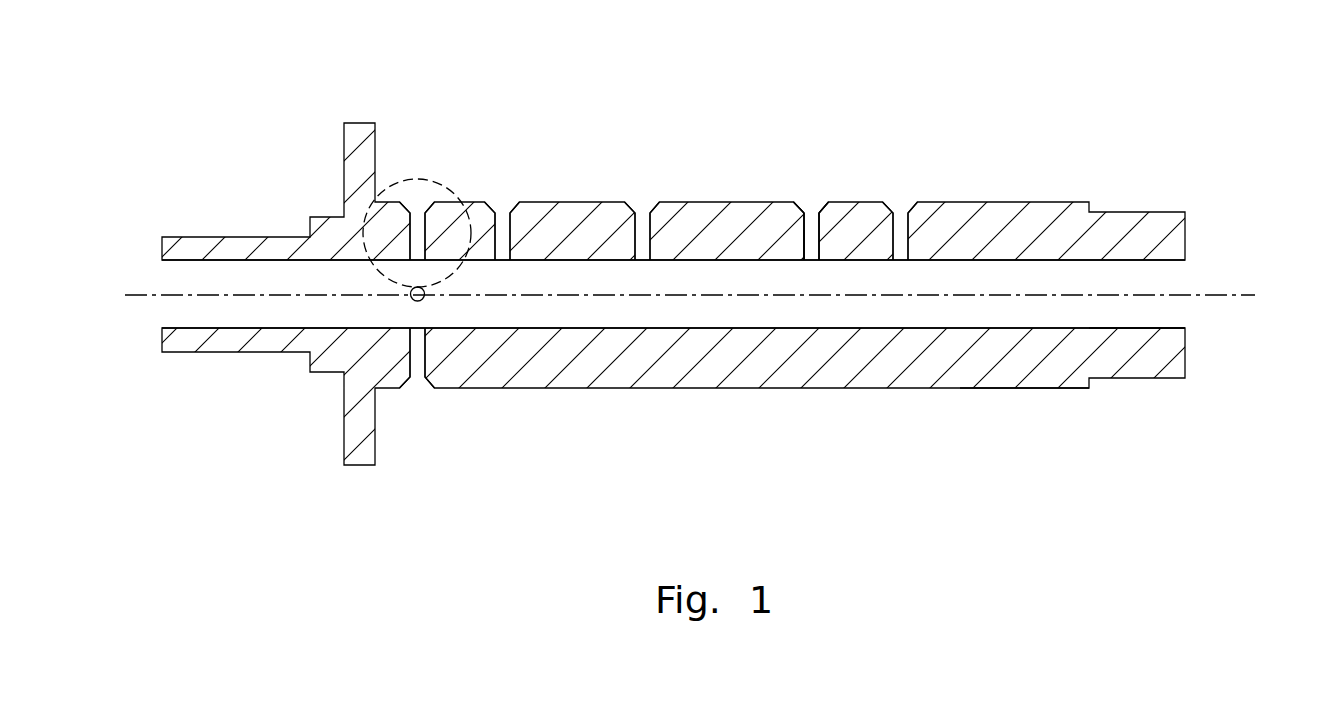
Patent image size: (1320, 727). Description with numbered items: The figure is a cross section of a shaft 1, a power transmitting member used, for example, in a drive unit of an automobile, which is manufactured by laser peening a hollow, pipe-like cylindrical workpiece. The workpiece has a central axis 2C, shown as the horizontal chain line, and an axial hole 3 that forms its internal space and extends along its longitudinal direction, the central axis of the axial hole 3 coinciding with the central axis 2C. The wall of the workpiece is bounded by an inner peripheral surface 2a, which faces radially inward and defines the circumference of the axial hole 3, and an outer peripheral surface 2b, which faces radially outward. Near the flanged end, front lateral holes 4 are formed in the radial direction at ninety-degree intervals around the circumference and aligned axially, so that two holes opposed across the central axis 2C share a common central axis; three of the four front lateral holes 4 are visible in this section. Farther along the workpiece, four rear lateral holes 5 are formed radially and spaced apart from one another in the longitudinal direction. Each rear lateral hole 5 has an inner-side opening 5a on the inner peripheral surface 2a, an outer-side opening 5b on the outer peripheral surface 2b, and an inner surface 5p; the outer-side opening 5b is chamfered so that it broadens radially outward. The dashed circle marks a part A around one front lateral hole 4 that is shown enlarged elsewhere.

The shaft 1 is at (1010, 88).
The inner peripheral surface 2a is at (1087, 328).
The outer peripheral surface 2b is at (1037, 391).
The central axis 2C is at (1230, 295).
The axial hole 3 is at (1008, 328).
The front lateral hole 4 is at (439, 181).
The rear lateral hole 5 is at (523, 183).
The inner-side opening 5a is at (812, 260).
The outer-side opening 5b is at (803, 202).
The inner surface 5p is at (810, 252).
The part A is at (407, 179).